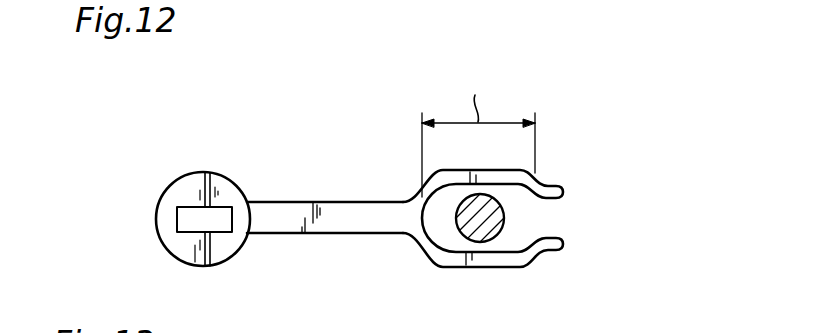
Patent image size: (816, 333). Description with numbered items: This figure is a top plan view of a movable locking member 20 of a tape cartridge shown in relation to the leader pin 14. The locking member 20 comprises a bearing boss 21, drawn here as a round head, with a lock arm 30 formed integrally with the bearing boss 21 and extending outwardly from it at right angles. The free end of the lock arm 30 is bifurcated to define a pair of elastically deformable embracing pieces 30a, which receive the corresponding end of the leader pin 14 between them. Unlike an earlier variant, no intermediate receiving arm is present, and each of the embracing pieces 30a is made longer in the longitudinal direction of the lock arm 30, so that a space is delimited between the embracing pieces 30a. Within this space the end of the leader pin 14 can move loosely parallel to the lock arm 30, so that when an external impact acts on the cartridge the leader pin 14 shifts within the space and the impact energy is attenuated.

The locking member 20 is at (395, 184).
The bearing boss 21 is at (182, 190).
The lock arm 30 is at (464, 249).
The embracing pieces 30a is at (563, 192).
The leader pin 14 is at (485, 227).